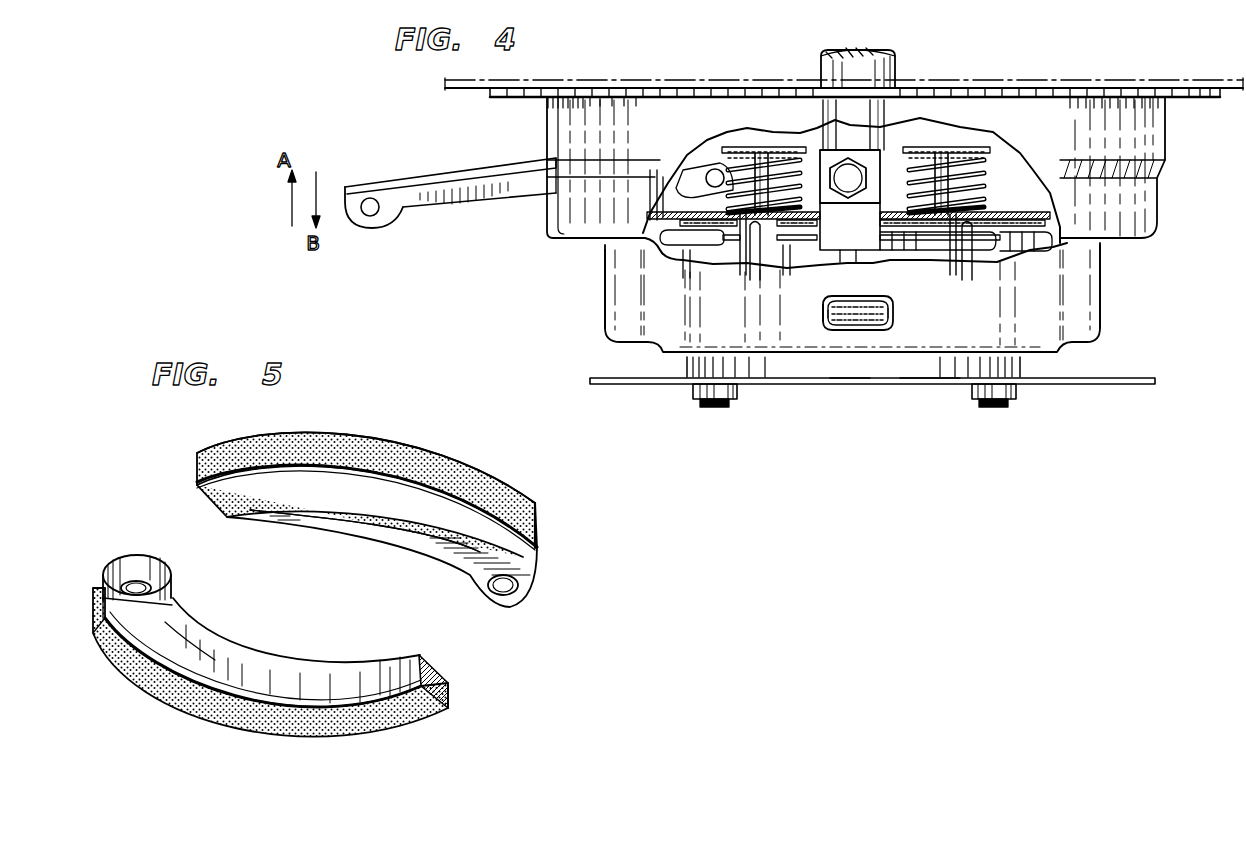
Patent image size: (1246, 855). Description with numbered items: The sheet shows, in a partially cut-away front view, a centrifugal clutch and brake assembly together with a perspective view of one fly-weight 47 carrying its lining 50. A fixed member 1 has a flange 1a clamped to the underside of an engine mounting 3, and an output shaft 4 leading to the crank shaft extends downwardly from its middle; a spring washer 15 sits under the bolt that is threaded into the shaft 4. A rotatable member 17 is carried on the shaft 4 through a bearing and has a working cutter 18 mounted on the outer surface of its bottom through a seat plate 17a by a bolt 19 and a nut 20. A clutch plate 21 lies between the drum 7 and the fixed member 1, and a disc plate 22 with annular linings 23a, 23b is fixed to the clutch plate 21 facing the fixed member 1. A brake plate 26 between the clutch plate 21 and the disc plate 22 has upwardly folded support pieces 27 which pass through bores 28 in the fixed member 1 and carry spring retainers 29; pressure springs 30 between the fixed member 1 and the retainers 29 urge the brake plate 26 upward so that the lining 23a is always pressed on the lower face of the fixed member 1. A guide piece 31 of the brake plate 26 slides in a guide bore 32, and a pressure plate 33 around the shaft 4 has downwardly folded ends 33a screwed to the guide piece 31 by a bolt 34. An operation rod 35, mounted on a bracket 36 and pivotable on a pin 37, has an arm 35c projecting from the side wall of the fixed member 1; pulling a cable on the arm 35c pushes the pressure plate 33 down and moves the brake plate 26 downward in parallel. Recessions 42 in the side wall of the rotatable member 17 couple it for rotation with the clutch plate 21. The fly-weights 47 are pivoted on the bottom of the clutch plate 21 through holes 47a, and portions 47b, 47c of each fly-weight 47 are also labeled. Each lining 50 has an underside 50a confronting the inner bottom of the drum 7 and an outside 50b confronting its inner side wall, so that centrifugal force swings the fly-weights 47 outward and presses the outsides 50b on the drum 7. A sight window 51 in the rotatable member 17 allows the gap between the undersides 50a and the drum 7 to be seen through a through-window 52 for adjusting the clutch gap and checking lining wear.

In FIG. 4, the fixed member 1 is at (1166, 198).
In FIG. 4, the flange 1a is at (1192, 97).
In FIG. 4, the engine mounting 3 is at (1026, 78).
In FIG. 4, the output shaft 4 is at (863, 60).
In FIG. 5, the output shaft 4 is at (451, 697).
In FIG. 4, the drum 7 is at (857, 330).
In FIG. 4, the spring washer 15 is at (1101, 275).
In FIG. 4, the rotatable member 17 is at (1103, 304).
In FIG. 4, the seat plate 17a is at (761, 372).
In FIG. 4, the working cutter 18 is at (1088, 385).
In FIG. 4, the bolt 19 is at (711, 407).
In FIG. 4, the nut 20 is at (693, 392).
In FIG. 4, the clutch plate 21 is at (783, 270).
In FIG. 4, the disc plate 22 is at (795, 233).
In FIG. 4, the annular lining 23a is at (998, 215).
In FIG. 4, the annular lining 23b is at (898, 225).
In FIG. 4, the brake plate 26 is at (1045, 245).
In FIG. 4, the support pieces 27 is at (764, 262).
In FIG. 4, the bore 28 is at (755, 233).
In FIG. 4, the spring retainer 29 is at (735, 130).
In FIG. 4, the pressure spring 30 is at (792, 150).
In FIG. 4, the guide piece 31 is at (846, 243).
In FIG. 4, the guide bore 32 is at (817, 212).
In FIG. 4, the pressure plate 33 is at (898, 150).
In FIG. 4, the ends of pressure plate 33a is at (822, 122).
In FIG. 4, the bolt 34 is at (850, 170).
In FIG. 4, the operation rod 35 is at (513, 202).
In FIG. 4, the arm 35c is at (398, 203).
In FIG. 4, the bracket 36 is at (700, 205).
In FIG. 4, the pin 37 is at (710, 176).
In FIG. 4, the recessions 42 is at (622, 284).
In FIG. 5, the fly-weights 47 is at (422, 537).
In FIG. 5, the hole 47a is at (505, 590).
In FIG. 5, the shoe rim surface 47b is at (390, 521).
In FIG. 5, the shoe end boss 47c is at (540, 549).
In FIG. 4, the lining 50 is at (848, 324).
In FIG. 5, the lining 50 is at (388, 432).
In FIG. 5, the underside of lining 50a is at (341, 488).
In FIG. 5, the outside of lining 50b is at (440, 458).
In FIG. 4, the sight window 51 is at (826, 312).
In FIG. 4, the through-window 52 is at (880, 330).